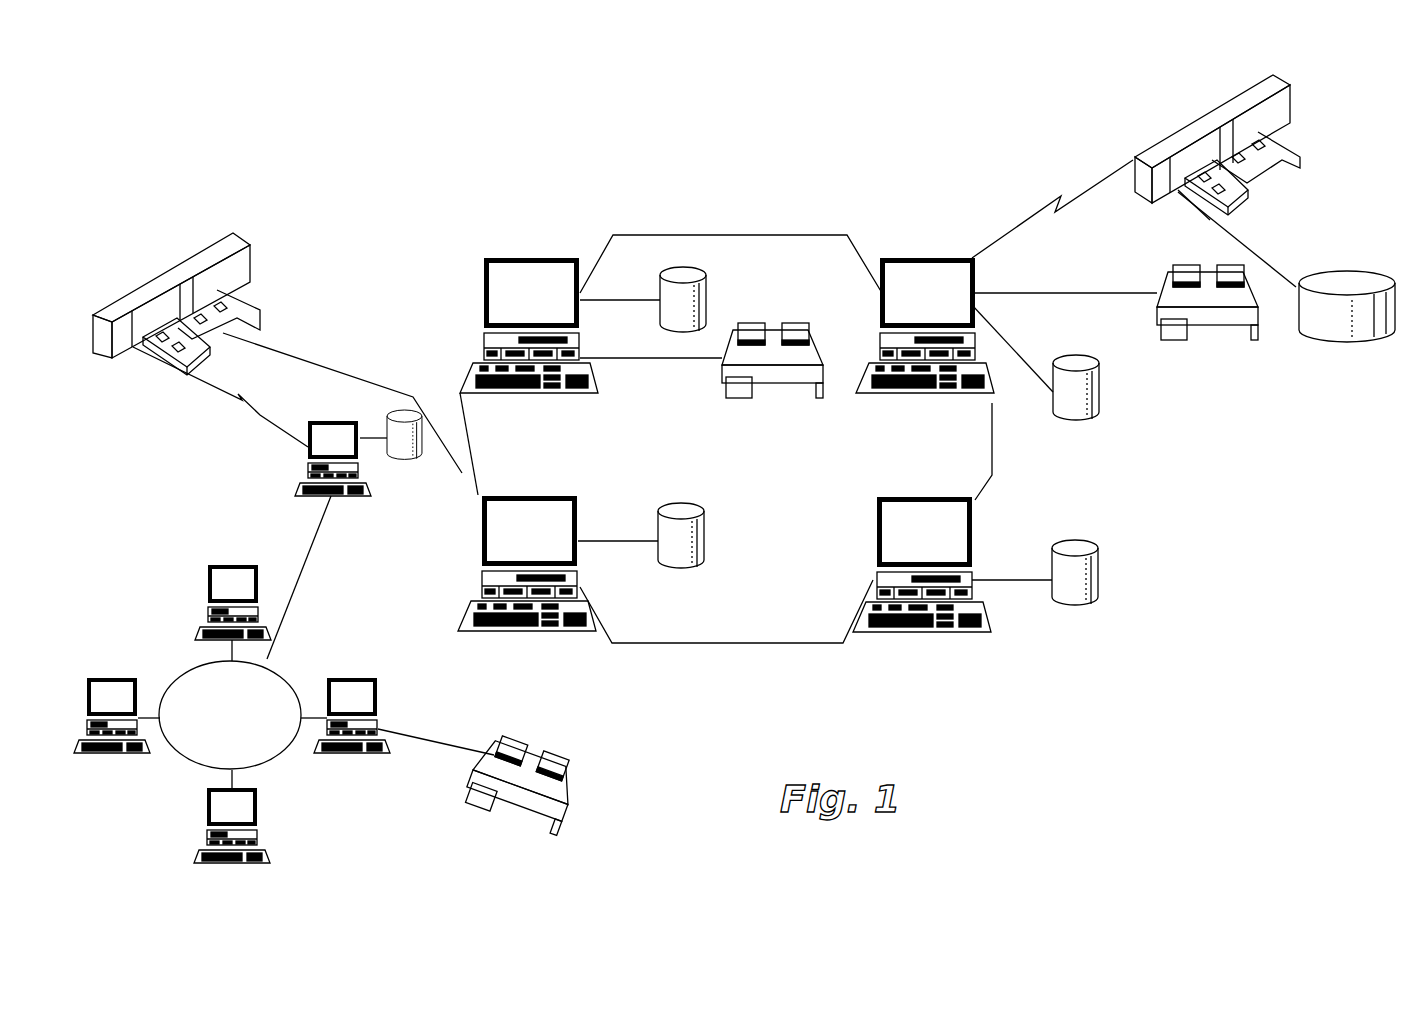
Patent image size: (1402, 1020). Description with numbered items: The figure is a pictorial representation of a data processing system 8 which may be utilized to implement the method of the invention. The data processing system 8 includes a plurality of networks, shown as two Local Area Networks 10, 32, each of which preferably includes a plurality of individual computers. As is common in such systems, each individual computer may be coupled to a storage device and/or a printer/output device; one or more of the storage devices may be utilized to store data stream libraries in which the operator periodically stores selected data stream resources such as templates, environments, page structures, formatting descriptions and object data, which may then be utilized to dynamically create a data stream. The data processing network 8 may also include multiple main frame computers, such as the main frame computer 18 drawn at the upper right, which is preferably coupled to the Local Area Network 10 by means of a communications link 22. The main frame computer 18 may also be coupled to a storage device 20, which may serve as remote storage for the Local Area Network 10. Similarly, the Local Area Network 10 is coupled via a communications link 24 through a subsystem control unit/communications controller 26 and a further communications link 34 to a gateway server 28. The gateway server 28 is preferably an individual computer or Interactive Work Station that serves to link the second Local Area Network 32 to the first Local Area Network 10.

The data processing system 8 is at (761, 196).
The Local Area Network 10 is at (753, 643).
The main frame computer 18 is at (1214, 110).
The storage device 20 is at (1370, 284).
The communications link 22 is at (1092, 190).
The communications link 24 is at (340, 358).
The subsystem control unit/communications controller 26 is at (248, 240).
The gateway server 28 is at (334, 421).
The Local Area Network 32 is at (182, 765).
The communications link 34 is at (258, 420).